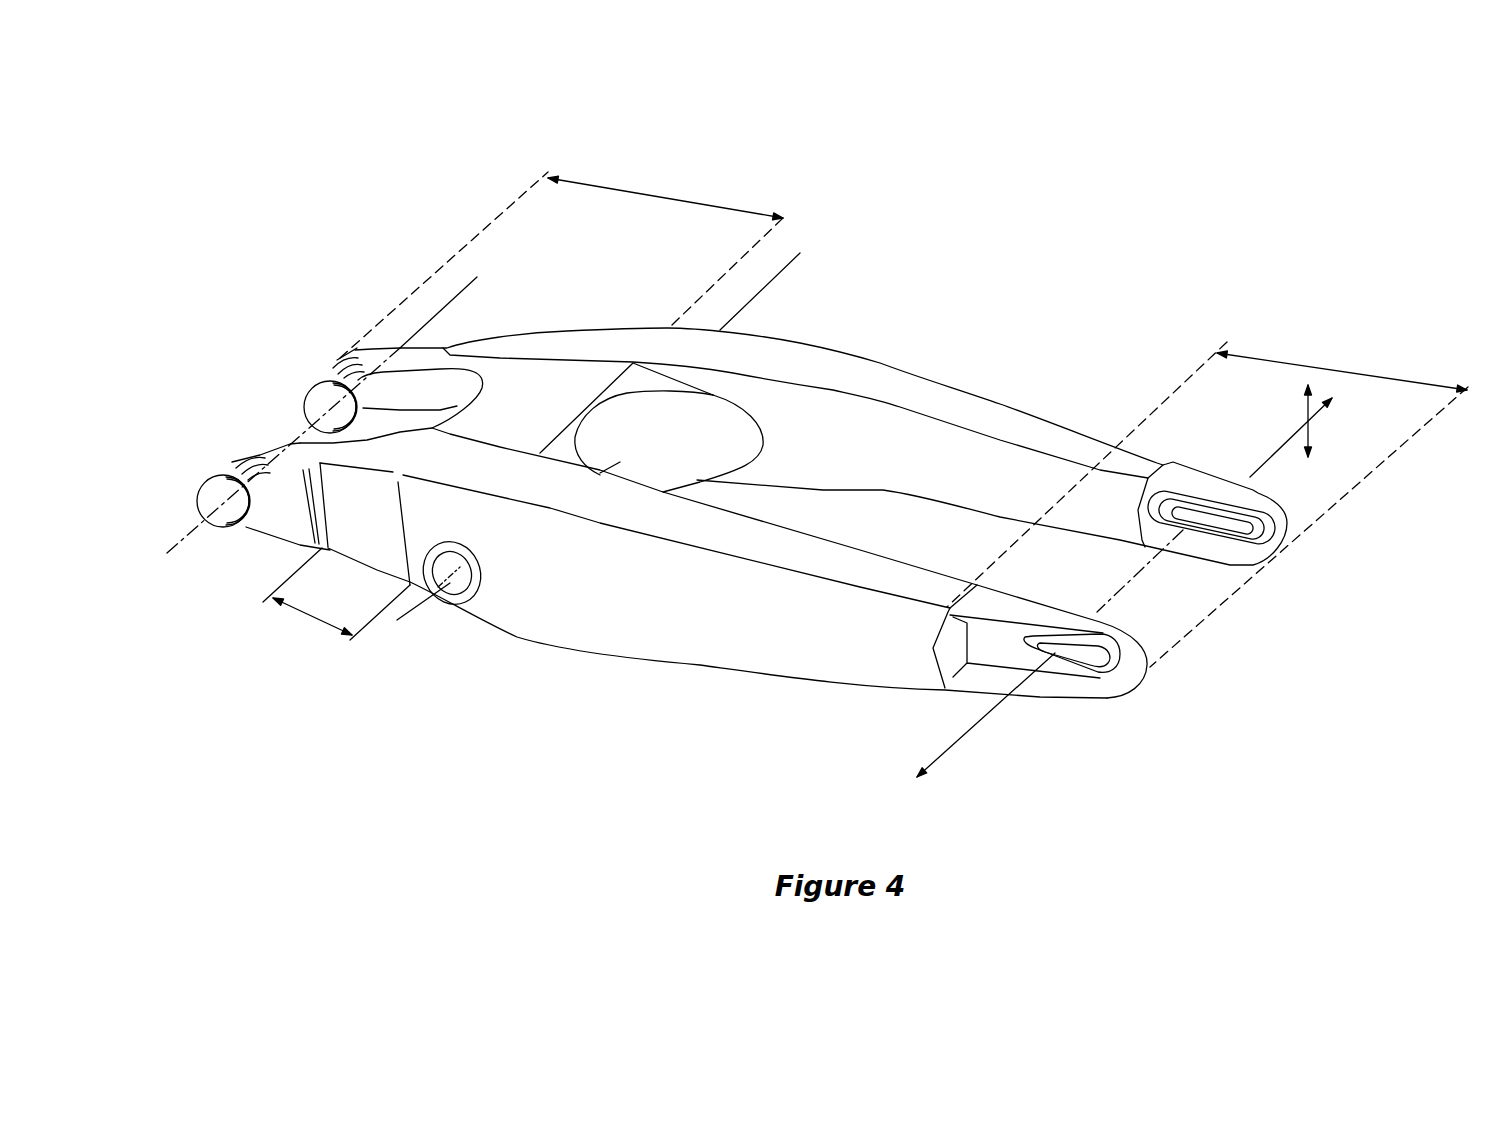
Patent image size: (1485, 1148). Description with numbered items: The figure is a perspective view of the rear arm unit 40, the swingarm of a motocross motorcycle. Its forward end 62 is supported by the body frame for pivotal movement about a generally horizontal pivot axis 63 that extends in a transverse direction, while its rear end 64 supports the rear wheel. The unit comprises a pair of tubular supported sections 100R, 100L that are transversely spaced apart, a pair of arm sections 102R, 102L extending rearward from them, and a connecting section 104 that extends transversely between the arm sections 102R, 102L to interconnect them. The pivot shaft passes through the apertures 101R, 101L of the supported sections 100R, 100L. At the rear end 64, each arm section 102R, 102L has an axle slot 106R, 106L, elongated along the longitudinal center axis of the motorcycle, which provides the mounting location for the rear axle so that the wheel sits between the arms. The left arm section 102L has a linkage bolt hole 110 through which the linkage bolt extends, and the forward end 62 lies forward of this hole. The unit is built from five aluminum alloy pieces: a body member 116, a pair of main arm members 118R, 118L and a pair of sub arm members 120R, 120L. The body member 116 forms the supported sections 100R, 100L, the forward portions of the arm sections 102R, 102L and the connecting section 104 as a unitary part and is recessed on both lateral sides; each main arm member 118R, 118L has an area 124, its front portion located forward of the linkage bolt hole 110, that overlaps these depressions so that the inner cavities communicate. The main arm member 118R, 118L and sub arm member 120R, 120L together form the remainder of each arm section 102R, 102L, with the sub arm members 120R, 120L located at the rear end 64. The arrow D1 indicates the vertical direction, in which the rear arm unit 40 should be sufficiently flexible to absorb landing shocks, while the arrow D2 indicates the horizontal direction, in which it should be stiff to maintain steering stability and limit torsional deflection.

The rear arm unit 40 is at (837, 313).
The forward end 62 is at (665, 197).
The pivot axis 63 is at (185, 546).
The rear end 64 is at (1323, 370).
The left supported section 100L is at (250, 447).
The right supported section 100R is at (358, 352).
The left aperture 101L is at (213, 495).
The right aperture 101R is at (323, 400).
The left arm section 102L is at (683, 657).
The right arm section 102R is at (1093, 430).
The connecting section 104 is at (556, 390).
The left axle slot 106L is at (1068, 663).
The right axle slot 106R is at (1240, 540).
The linkage bolt hole 110 is at (457, 592).
The body member 116 is at (510, 388).
The left main arm member 118L is at (777, 552).
The right main arm member 118R is at (1020, 430).
The left sub arm member 120L is at (1010, 603).
The right sub arm member 120R is at (1200, 480).
The area 124 is at (317, 620).
The vertical direction D1 is at (1297, 405).
The horizontal direction D2 is at (1323, 420).